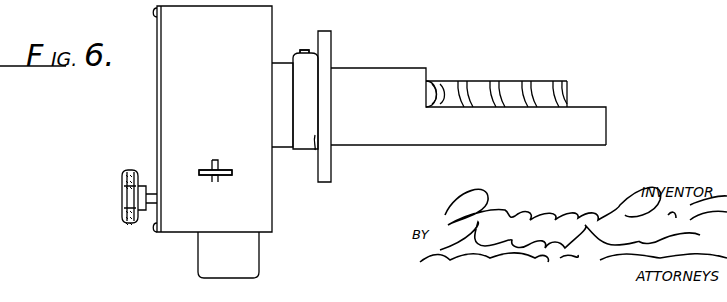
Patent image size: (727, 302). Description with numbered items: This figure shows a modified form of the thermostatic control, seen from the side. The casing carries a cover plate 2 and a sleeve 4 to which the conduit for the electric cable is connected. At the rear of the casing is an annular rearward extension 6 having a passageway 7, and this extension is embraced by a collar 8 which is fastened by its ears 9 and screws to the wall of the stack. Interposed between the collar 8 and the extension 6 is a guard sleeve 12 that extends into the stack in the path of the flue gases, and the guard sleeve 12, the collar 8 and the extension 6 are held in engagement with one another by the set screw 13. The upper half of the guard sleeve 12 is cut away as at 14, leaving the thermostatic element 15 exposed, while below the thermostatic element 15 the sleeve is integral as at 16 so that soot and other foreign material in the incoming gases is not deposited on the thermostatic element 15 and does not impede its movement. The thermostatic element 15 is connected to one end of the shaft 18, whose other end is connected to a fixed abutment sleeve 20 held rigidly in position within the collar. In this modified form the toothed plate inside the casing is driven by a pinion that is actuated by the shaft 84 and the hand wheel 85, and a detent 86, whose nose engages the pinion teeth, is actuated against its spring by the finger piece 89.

The cover plate 2 is at (157, 94).
The sleeve 4 is at (262, 260).
The annular rearward extension 6 is at (283, 132).
The passageway 7 is at (240, 32).
The collar 8 is at (300, 134).
The ears 9 is at (324, 30).
The guard sleeve 12 is at (365, 128).
The set screw 13 is at (300, 51).
The cut away 14 is at (587, 108).
The thermostatic element 15 is at (536, 81).
The integral portion 16 is at (497, 133).
The shaft 18 is at (565, 107).
The fixed abutment sleeve 20 is at (442, 81).
The shaft 84 is at (148, 205).
The hand wheel 85 is at (130, 172).
The detent 86 is at (213, 182).
The finger piece 89 is at (230, 170).